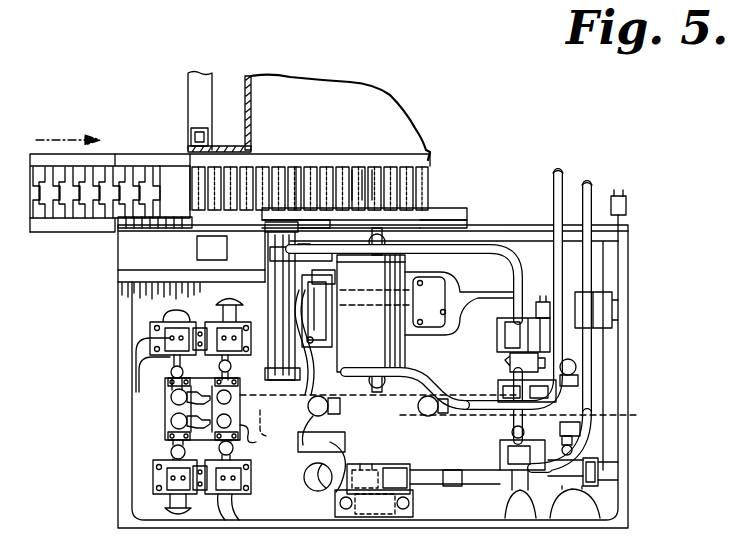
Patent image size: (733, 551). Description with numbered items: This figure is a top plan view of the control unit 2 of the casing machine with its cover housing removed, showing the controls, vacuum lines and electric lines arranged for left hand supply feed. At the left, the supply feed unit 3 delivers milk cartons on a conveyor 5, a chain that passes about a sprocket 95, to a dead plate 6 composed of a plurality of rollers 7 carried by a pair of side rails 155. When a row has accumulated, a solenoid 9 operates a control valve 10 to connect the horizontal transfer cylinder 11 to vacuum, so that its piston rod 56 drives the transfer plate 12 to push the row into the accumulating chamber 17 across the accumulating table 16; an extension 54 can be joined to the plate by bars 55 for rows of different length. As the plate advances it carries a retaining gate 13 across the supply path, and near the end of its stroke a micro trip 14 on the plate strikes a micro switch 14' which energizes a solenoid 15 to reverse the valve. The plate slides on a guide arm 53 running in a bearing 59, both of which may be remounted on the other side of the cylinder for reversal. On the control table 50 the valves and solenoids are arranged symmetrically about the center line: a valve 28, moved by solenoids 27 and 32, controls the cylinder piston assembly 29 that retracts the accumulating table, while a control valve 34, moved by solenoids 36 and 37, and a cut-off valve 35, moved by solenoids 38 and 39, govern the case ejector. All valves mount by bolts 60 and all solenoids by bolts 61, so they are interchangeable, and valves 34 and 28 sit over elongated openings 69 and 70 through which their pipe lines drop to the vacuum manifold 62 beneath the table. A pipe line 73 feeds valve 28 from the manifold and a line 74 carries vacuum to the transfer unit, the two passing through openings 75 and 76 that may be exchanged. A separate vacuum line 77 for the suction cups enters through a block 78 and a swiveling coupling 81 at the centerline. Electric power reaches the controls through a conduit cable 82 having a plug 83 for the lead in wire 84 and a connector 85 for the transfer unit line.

The control unit 2 is at (112, 484).
The supply feed unit 3 is at (116, 153).
The conveyor 5 is at (88, 212).
The dead plate 6 is at (300, 190).
The rollers 7 is at (372, 176).
The solenoid 9 is at (503, 459).
The control valve 10 is at (509, 372).
The horizontal transfer cylinder 11 is at (405, 357).
The transfer plate 12 is at (425, 190).
The retaining gate 13 is at (268, 304).
The micro trip 14 is at (320, 335).
The micro switch 14' is at (339, 273).
The solenoid 15 is at (500, 322).
The accumulating table 16 is at (378, 104).
The accumulating chamber 17 is at (262, 92).
The solenoid 27 is at (603, 471).
The valve 28 is at (577, 387).
The cylinder piston assembly 29 is at (396, 446).
The solenoid 32 is at (608, 338).
The control valve 34 is at (168, 427).
The cut-off valve 35 is at (254, 442).
The solenoid 36 is at (167, 323).
The solenoid 37 is at (172, 497).
The solenoid 38 is at (216, 323).
The solenoid 39 is at (248, 491).
The table 50 is at (607, 497).
The guide arm 53 is at (286, 358).
The extension 54 is at (462, 206).
The bars 55 is at (466, 219).
The piston rod 56 is at (368, 240).
The bearing 59 is at (284, 257).
The bolts 60 is at (562, 439).
The bolts 61 is at (544, 310).
The vacuum manifold 62 is at (266, 435).
The elongated opening 69 is at (170, 404).
The elongated opening 70 is at (586, 426).
The pipe line 73 is at (600, 396).
The line 74 is at (478, 410).
The opening 75 is at (430, 416).
The opening 76 is at (333, 418).
The vacuum line 77 is at (592, 202).
The block 78 is at (415, 490).
The coupling 81 is at (372, 520).
The electric conduit cable 82 is at (619, 251).
The plug 83 is at (308, 438).
The lead in wire 84 is at (324, 488).
The connector 85 is at (627, 208).
The sprocket 95 is at (155, 238).
The side rails 155 is at (277, 160).